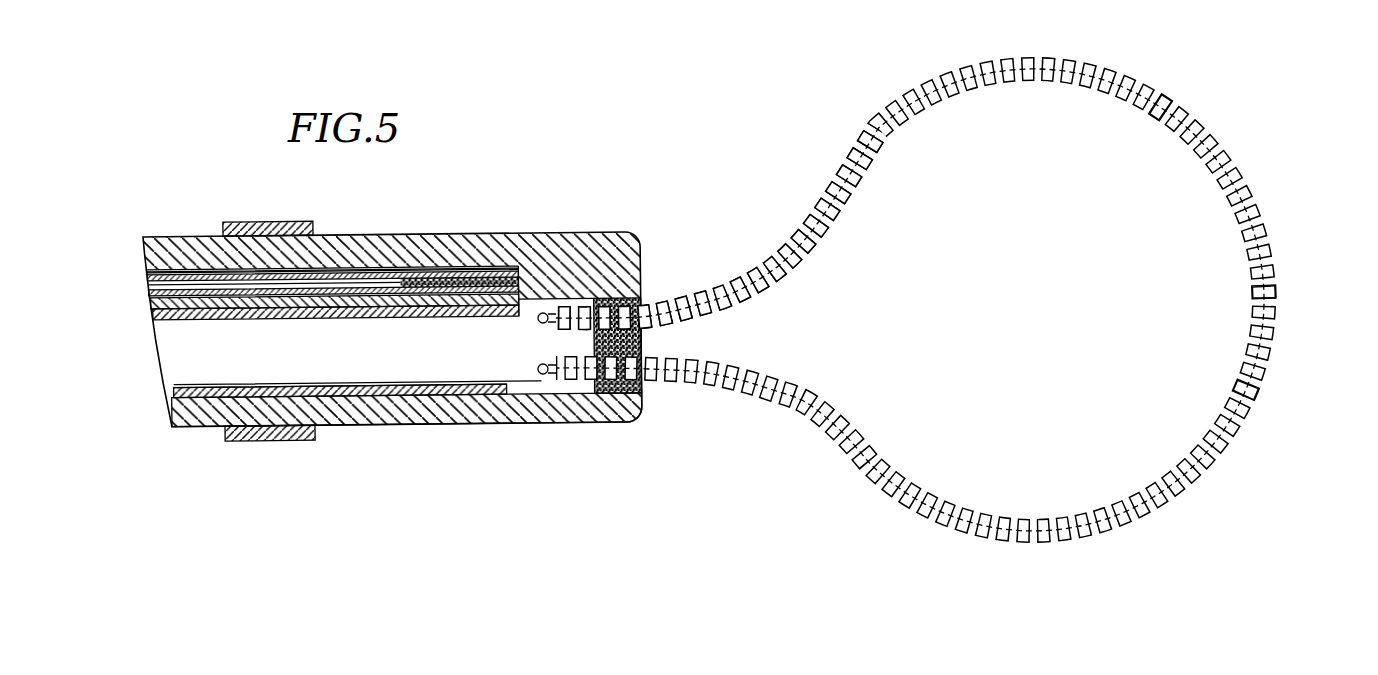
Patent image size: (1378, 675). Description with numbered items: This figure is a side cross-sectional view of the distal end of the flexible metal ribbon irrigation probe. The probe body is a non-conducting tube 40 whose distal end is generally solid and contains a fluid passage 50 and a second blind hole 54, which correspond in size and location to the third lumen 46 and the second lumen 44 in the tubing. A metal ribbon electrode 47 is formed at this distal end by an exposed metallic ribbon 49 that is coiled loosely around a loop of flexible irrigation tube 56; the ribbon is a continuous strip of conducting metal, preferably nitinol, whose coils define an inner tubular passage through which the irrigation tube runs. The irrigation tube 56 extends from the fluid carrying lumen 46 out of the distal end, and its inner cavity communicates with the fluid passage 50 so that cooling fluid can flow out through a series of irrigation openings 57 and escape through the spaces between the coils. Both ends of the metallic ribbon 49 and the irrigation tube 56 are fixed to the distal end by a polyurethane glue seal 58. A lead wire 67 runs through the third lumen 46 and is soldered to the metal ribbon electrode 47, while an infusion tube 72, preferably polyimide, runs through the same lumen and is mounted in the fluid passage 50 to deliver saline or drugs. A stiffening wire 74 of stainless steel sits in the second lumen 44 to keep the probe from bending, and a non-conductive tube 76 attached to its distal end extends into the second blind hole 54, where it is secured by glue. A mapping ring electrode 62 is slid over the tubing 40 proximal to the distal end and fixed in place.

The non-conducting tube 40 is at (414, 321).
The second lumen 44 is at (157, 296).
The third lumen 46 is at (178, 350).
The metal ribbon electrode 47 is at (960, 271).
The metallic ribbon 49 is at (1158, 88).
The fluid passage 50 is at (523, 300).
The second blind hole 54 is at (520, 270).
The irrigation tube 56 is at (837, 175).
The irrigation openings 57 is at (1272, 298).
The polyurethane glue seal 58 is at (640, 346).
The mapping ring electrode 62 is at (282, 223).
The lead wire 67 is at (520, 377).
The infusion tube 72 is at (418, 390).
The stiffening wire 74 is at (153, 283).
The non-conductive tube 76 is at (468, 270).